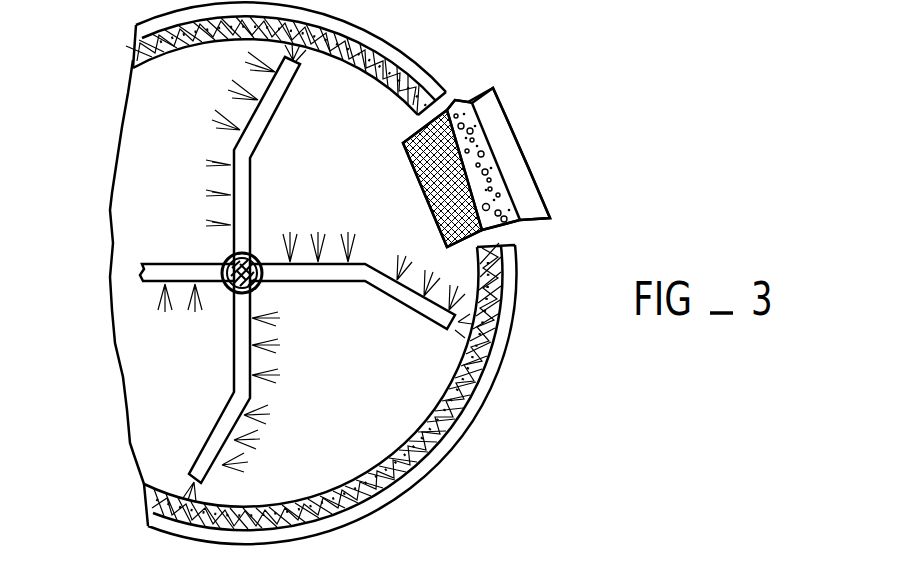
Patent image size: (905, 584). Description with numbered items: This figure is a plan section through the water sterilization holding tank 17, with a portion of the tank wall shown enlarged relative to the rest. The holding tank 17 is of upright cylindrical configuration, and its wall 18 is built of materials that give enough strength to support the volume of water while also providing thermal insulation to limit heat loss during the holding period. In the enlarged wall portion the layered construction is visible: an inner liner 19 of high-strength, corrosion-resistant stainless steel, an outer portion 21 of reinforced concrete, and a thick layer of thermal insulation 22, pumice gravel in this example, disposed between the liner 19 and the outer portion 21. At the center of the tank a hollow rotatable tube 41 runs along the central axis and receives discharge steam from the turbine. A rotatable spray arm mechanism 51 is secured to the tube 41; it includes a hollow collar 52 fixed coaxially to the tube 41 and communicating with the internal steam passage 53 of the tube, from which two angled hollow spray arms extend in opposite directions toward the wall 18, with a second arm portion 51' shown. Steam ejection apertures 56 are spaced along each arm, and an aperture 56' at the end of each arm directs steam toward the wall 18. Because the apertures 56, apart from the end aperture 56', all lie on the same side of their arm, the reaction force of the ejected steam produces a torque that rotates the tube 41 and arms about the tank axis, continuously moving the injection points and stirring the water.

The holding tank 17 is at (141, 9).
The wall 18 is at (463, 81).
The inner liner 19 is at (427, 179).
The outer portion 21 is at (498, 153).
The thermal insulation 22 is at (440, 128).
The hollow rotatable tube 41 is at (263, 262).
The rotatable spray arm mechanism 51 is at (219, 387).
The right spray arm 51' is at (361, 314).
The hollow collar 52 is at (263, 287).
The internal steam passage 53 is at (221, 265).
The steam ejection apertures 56 is at (288, 353).
The end aperture 56' is at (347, 38).